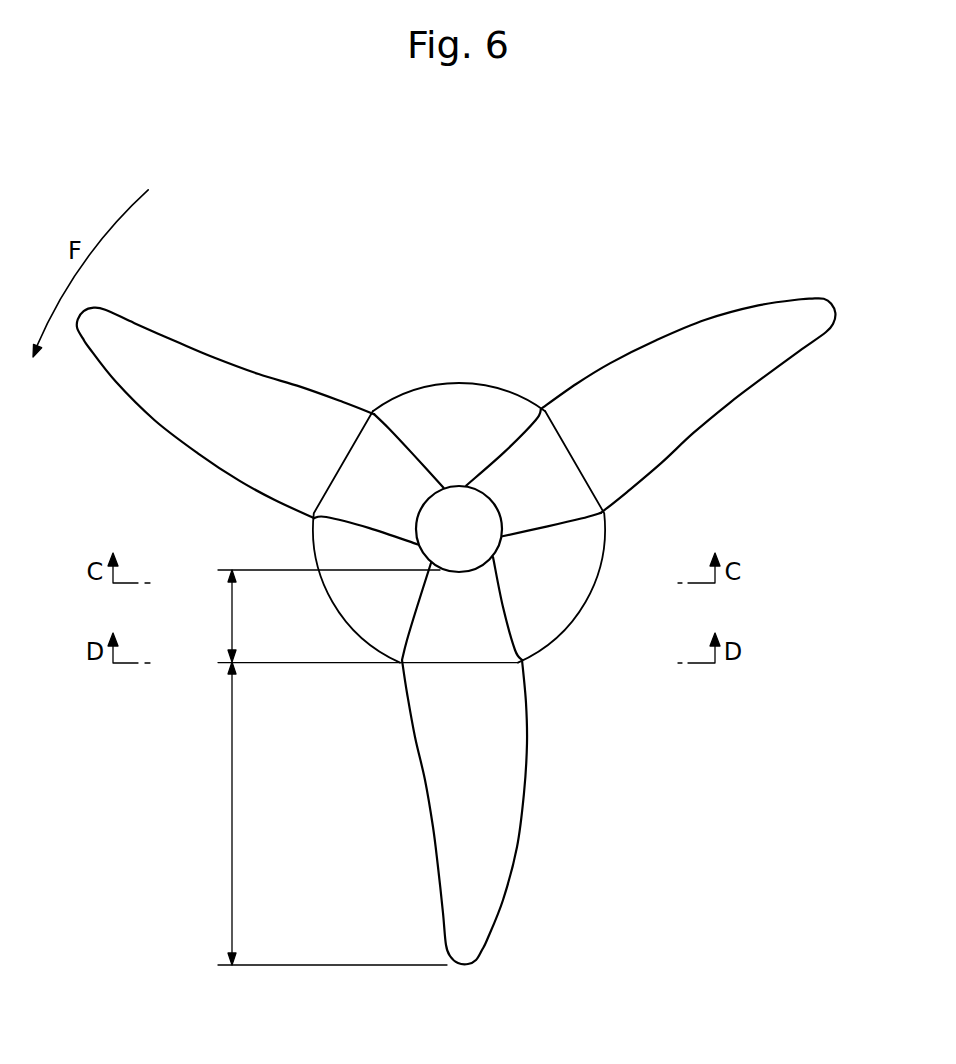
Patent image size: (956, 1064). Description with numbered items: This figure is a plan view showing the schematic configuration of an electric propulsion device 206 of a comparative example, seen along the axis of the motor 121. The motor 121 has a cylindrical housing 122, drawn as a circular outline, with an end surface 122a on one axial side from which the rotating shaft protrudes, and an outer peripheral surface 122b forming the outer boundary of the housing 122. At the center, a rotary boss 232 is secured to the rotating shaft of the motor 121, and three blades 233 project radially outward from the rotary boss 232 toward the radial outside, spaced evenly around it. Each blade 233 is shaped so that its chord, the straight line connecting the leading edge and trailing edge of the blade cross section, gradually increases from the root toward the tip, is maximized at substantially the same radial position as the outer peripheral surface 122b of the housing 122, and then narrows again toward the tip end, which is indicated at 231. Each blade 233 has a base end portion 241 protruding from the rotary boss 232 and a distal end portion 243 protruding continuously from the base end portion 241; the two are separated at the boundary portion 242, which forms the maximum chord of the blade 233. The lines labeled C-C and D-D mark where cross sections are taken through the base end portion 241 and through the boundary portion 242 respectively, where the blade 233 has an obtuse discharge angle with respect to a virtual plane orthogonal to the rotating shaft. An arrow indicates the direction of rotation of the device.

The electric propulsion device 206 is at (326, 281).
The motor 121 is at (483, 365).
The housing 122 is at (464, 364).
The end surface 122a is at (415, 420).
The outer peripheral surface 122b is at (515, 388).
The blade tip edge 231 is at (795, 276).
The rotary boss 232 is at (503, 550).
The blade 233 is at (456, 592).
The base end portion 241 is at (308, 616).
The boundary portion 242 is at (453, 663).
The distal end portion 243 is at (312, 813).